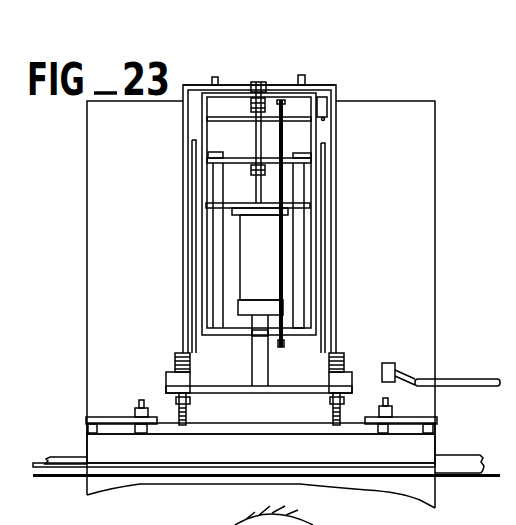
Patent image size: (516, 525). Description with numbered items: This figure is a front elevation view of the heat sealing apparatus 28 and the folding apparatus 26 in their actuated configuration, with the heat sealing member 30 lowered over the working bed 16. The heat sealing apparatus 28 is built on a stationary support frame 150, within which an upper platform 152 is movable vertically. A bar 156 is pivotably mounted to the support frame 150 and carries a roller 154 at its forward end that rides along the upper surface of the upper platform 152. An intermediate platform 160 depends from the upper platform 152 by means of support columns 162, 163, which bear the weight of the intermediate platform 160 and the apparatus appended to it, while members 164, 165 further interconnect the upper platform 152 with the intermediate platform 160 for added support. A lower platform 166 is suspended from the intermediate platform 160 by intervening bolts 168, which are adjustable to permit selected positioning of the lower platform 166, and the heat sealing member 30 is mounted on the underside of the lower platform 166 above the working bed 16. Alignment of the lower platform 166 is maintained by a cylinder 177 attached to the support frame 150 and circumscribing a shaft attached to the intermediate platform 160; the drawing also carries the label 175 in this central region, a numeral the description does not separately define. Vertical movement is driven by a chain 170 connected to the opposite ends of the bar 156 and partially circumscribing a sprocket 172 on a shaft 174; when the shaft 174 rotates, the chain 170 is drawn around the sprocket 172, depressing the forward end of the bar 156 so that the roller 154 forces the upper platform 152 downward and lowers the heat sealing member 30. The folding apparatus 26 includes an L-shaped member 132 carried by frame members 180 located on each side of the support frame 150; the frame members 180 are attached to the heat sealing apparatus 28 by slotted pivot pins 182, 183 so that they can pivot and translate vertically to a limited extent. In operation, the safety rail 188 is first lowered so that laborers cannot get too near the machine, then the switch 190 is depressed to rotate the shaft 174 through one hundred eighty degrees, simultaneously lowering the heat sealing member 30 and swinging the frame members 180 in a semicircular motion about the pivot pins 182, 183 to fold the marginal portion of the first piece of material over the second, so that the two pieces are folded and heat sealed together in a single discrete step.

The working bed 16 is at (139, 477).
The folding apparatus 26 is at (452, 438).
The heat sealing apparatus 28 is at (272, 79).
The heat sealing member 30 is at (100, 467).
The L-shaped member 132 is at (458, 462).
The support frame 150 is at (244, 85).
The upper platform 152 is at (238, 160).
The roller 154 is at (284, 157).
The bar 156 is at (284, 138).
The intermediate platform 160 is at (245, 393).
The support column 162 is at (204, 165).
The support column 163 is at (303, 229).
The interconnecting member 164 is at (194, 187).
The interconnecting member 165 is at (325, 172).
The lower platform 166 is at (188, 433).
The bolts 168 is at (173, 405).
The chain 170 is at (283, 242).
The sprocket 172 is at (285, 346).
The shaft 174 is at (268, 333).
The cylinder 175 is at (253, 281).
The cylinder 177 is at (258, 352).
The frame members 180 is at (185, 213).
The pivot pin 182 is at (214, 77).
The pivot pin 183 is at (302, 75).
The safety rail 188 is at (462, 378).
The switch 190 is at (390, 362).